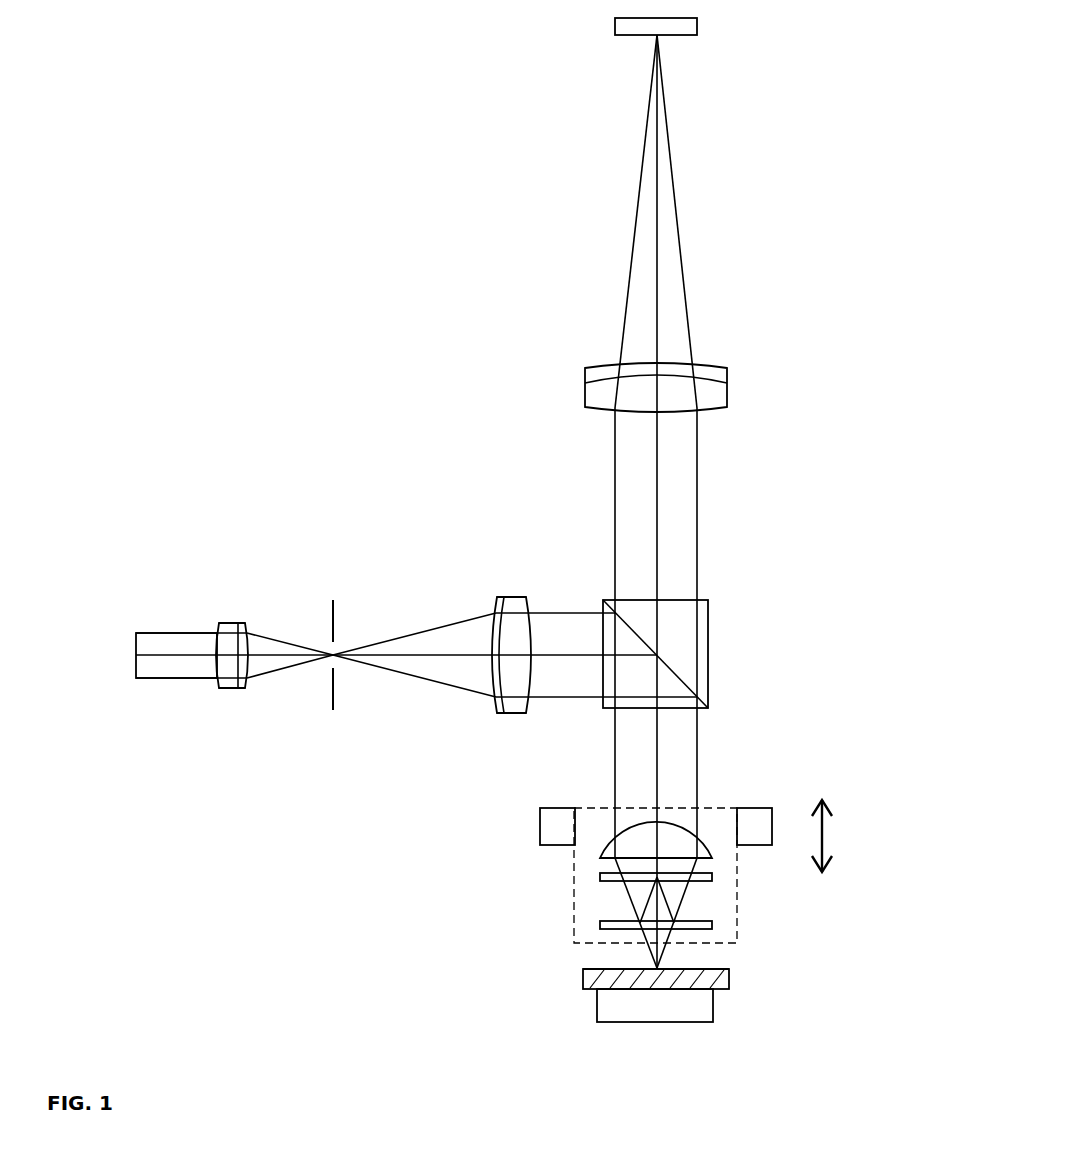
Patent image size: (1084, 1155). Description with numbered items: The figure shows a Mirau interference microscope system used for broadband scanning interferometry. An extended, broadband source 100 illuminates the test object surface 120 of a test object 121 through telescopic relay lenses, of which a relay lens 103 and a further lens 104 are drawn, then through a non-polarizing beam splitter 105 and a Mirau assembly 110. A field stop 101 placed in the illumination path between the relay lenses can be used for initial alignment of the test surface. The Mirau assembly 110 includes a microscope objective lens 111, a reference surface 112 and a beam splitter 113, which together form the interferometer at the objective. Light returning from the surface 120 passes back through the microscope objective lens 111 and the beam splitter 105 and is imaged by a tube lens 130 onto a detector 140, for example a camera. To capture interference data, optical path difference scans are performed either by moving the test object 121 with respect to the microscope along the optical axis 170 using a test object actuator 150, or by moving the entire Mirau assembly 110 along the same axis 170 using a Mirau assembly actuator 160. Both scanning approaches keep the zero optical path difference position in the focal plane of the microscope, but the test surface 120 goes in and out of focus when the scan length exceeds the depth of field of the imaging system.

The broadband source 100 is at (136, 633).
The field stop 101 is at (333, 600).
The telescopic relay lens 103 is at (228, 623).
The collimating lens 104 is at (513, 596).
The non-polarizing beam splitter 105 is at (708, 640).
The Mirau assembly 110 is at (606, 796).
The microscope objective lens 111 is at (602, 848).
The reference surface 112 is at (600, 877).
The beam splitter 113 is at (600, 925).
The test object surface 120 is at (583, 970).
The test object 121 is at (729, 979).
The tube lens 130 is at (592, 363).
The detector 140 is at (613, 23).
The test object actuator 150 is at (597, 1007).
The Mirau assembly actuator 160 is at (540, 828).
The optical axis 170 is at (825, 832).